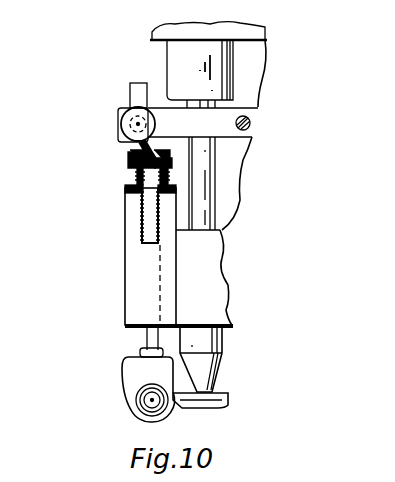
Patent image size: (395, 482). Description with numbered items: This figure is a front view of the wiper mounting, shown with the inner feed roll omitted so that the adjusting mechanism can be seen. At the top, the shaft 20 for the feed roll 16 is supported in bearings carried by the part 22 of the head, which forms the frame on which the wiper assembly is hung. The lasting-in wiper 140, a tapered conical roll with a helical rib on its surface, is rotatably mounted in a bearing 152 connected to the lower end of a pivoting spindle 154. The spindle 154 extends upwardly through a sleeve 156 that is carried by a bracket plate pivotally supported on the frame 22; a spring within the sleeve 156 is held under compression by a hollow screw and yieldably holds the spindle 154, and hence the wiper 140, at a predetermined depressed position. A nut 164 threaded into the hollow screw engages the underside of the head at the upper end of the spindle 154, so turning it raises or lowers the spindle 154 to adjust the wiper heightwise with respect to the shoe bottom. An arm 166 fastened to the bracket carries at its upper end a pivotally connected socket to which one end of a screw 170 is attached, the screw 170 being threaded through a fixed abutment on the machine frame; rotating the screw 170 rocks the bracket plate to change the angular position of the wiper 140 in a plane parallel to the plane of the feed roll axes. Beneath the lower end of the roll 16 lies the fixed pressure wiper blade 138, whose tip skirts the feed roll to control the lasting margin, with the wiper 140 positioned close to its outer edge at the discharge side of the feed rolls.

The screw 170 is at (120, 125).
The nut 164 is at (128, 163).
The arm 166 is at (148, 199).
The sleeve 156 is at (125, 241).
The pivoting spindle 154 is at (147, 340).
The bearing 152 is at (122, 380).
The lasting-in wiper 140 is at (147, 405).
The shaft 20 is at (213, 215).
The part 22 is at (210, 272).
The roll 16 is at (215, 370).
The pressure wiper blade 138 is at (228, 398).